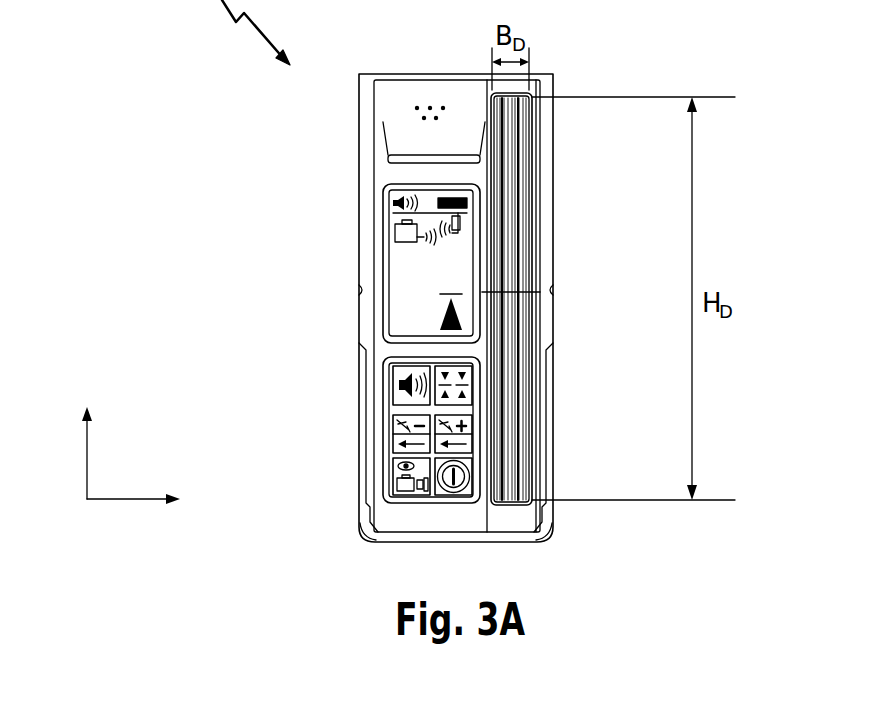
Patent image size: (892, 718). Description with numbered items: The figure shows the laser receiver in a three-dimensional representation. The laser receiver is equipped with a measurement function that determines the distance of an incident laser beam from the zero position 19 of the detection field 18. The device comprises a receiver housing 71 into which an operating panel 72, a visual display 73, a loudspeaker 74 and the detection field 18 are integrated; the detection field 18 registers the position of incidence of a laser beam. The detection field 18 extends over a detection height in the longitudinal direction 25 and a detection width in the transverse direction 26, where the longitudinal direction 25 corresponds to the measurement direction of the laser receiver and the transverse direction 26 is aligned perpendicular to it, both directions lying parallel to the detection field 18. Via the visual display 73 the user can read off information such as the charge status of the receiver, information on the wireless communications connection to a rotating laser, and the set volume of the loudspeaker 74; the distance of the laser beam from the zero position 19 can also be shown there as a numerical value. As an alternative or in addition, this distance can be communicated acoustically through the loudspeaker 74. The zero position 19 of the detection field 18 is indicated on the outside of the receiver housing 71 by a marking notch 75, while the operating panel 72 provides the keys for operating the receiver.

The detection field 18 is at (516, 120).
The zero position 19 is at (540, 292).
The receiver housing 71 is at (538, 470).
The operating panel 72 is at (395, 412).
The visual display 73 is at (396, 203).
The loudspeaker 74 is at (425, 105).
The marking notch 75 is at (359, 290).
The longitudinal direction 25 is at (71, 446).
The transverse direction 26 is at (139, 518).